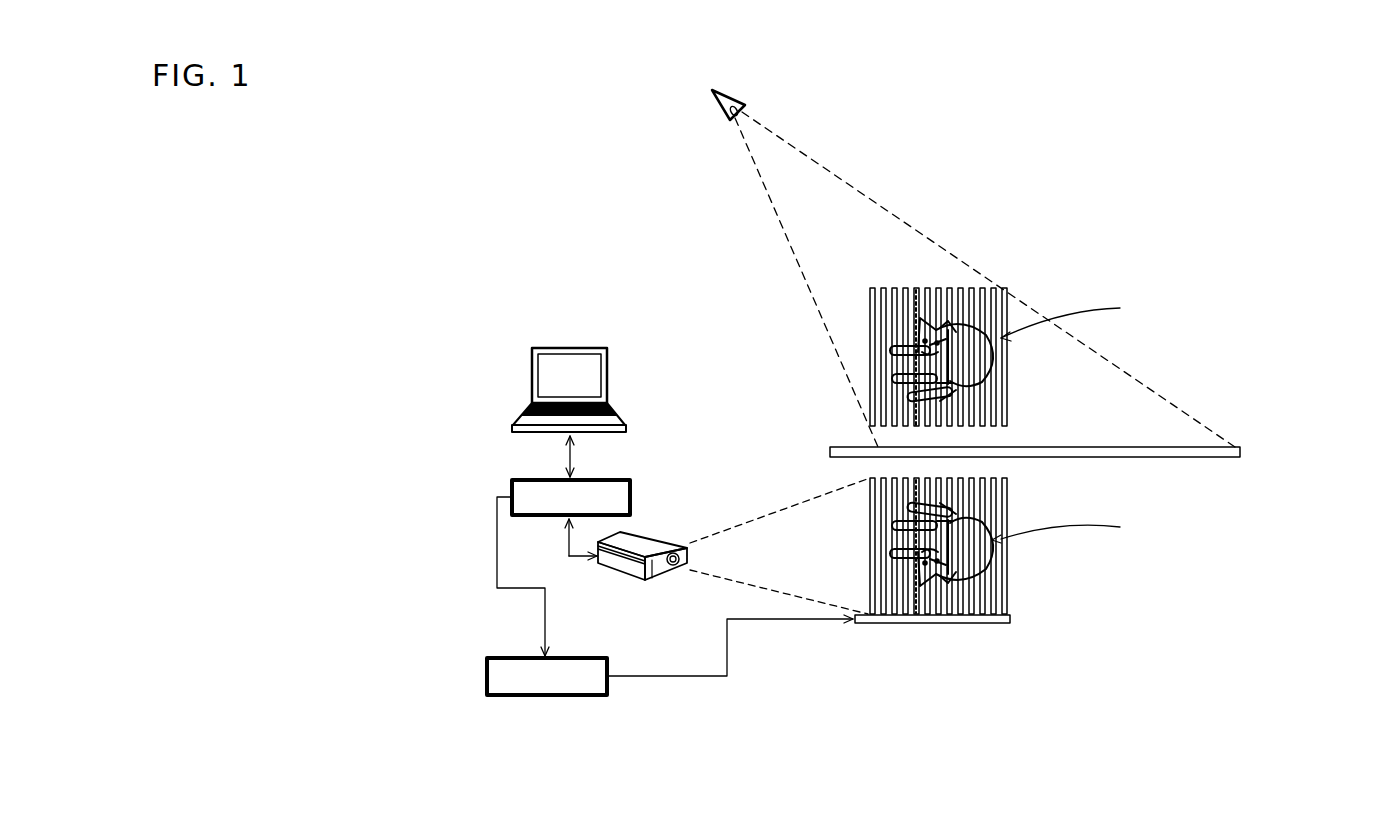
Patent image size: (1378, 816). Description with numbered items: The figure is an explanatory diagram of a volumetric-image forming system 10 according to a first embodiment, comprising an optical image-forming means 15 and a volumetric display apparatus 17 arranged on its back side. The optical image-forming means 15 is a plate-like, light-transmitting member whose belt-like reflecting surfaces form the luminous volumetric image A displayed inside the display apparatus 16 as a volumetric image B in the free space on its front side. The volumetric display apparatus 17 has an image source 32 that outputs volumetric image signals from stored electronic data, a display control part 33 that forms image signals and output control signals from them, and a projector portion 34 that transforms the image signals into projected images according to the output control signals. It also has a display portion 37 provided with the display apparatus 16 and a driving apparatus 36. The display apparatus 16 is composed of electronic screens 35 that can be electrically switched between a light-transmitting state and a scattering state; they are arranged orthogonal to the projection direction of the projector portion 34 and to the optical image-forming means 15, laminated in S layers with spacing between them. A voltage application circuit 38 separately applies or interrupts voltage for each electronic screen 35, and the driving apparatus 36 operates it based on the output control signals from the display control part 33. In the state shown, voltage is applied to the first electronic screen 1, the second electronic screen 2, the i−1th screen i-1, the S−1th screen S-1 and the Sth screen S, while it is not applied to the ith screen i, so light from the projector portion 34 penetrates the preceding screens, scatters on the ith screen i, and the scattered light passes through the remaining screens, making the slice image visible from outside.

The volumetric-image forming system 10 is at (583, 168).
The optical image-forming means 15 is at (1160, 449).
The display apparatus 16 is at (1019, 553).
The volumetric display apparatus 17 is at (550, 320).
The image source 32 is at (530, 393).
The display control part 33 is at (522, 490).
The projector portion 34 is at (657, 540).
The electronic screens 35 is at (1000, 518).
The driving apparatus 36 is at (503, 677).
The display portion 37 is at (662, 715).
The voltage application circuit 38 is at (1010, 618).
The first electronic screen 1 is at (873, 616).
The second electronic screen 2 is at (883, 616).
The i−1th electronic screen i-1 is at (905, 616).
The ith electronic screen i is at (917, 616).
The S−1th electronic screen S-1 is at (992, 616).
The Sth electronic screen S is at (1000, 616).